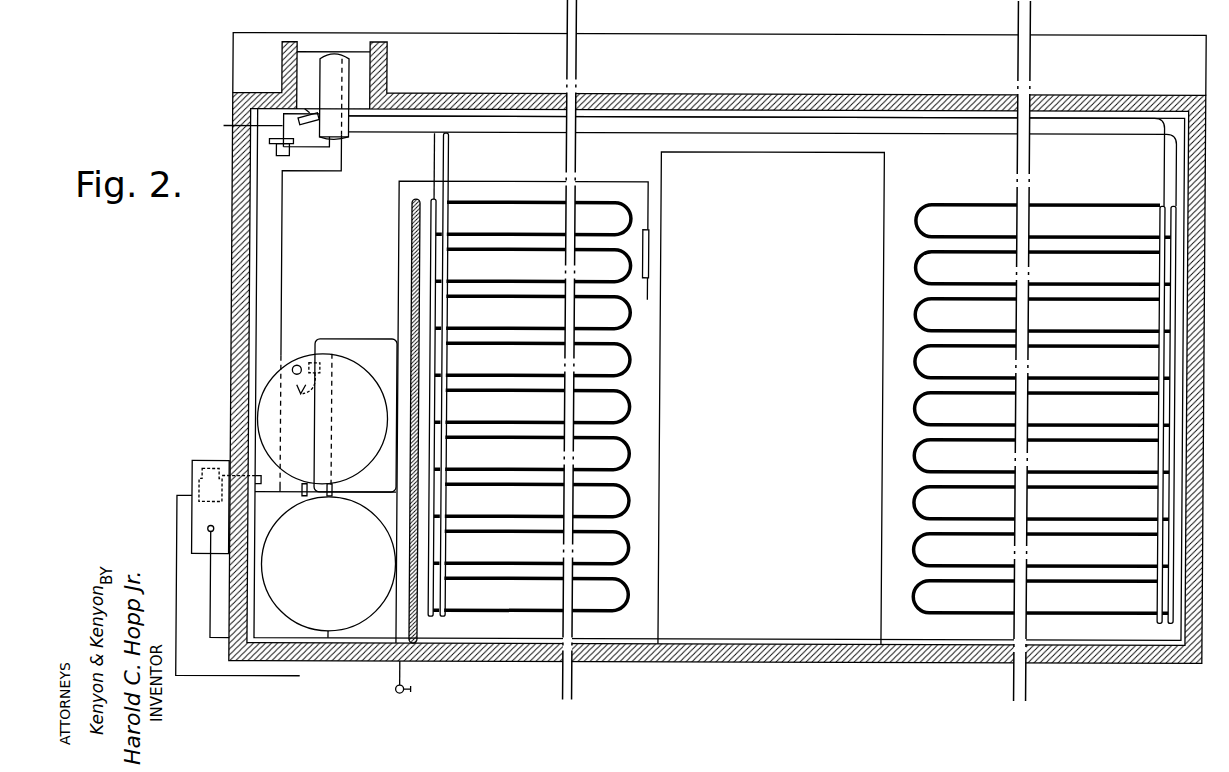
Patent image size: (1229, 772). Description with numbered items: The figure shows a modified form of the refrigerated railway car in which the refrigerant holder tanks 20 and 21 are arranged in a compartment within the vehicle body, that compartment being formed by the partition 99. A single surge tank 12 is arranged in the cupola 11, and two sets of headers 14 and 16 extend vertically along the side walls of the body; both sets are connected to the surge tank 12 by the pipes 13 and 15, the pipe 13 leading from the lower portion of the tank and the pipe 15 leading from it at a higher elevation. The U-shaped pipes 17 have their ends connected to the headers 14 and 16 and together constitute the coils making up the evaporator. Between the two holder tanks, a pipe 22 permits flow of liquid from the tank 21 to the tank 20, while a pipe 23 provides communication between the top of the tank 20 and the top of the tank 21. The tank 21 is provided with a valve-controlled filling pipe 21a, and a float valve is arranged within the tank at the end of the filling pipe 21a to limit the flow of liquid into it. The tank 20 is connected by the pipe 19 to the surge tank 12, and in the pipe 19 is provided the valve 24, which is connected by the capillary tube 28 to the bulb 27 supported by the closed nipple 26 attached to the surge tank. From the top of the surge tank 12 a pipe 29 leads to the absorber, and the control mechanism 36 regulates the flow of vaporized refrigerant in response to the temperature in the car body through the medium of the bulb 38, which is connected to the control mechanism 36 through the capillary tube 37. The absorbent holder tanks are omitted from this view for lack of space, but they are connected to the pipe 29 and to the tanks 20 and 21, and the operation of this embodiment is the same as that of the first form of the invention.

The cupola 11 is at (386, 62).
The surge tank 12 is at (325, 68).
The pipe 13 is at (372, 134).
The header 14 is at (410, 213).
The pipe 15 is at (412, 116).
The header 16 is at (448, 218).
The U-shaped pipes 17 is at (516, 204).
The pipe 19 is at (213, 639).
The refrigerant holder tank 20 is at (293, 588).
The refrigerant holder tank 21 is at (268, 407).
The filling pipe 21a is at (398, 690).
The pipe 22 is at (300, 494).
The pipe 23 is at (334, 430).
The valve 24 is at (278, 157).
The closed nipple 26 is at (306, 131).
The bulb 27 is at (308, 117).
The capillary tube 28 is at (240, 125).
The pipe 29 is at (282, 296).
The control mechanism 36 is at (196, 487).
The capillary tube 37 is at (590, 182).
The bulb 38 is at (650, 252).
The partition 99 is at (420, 627).